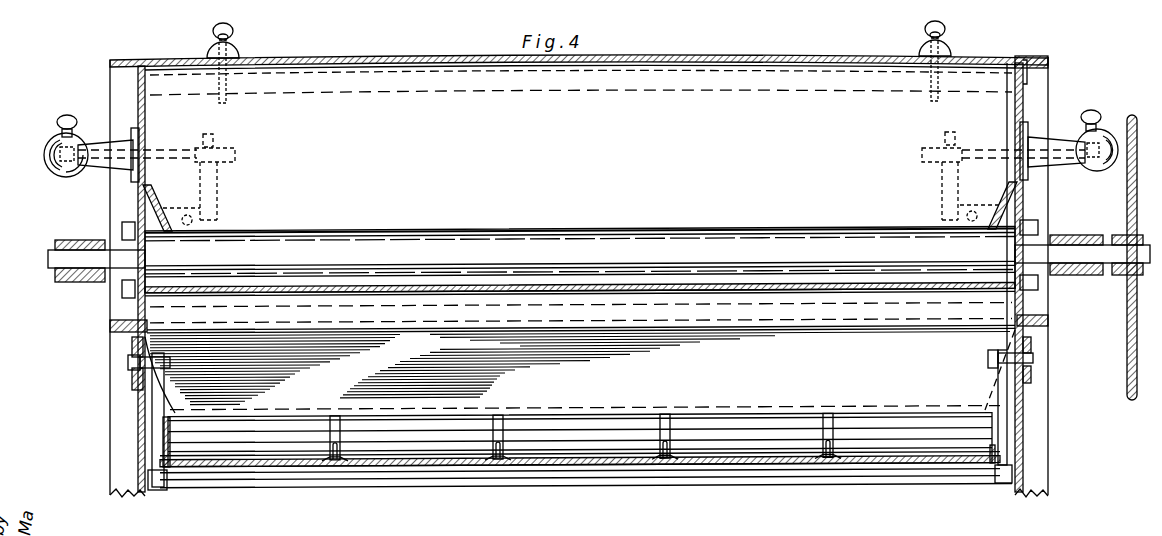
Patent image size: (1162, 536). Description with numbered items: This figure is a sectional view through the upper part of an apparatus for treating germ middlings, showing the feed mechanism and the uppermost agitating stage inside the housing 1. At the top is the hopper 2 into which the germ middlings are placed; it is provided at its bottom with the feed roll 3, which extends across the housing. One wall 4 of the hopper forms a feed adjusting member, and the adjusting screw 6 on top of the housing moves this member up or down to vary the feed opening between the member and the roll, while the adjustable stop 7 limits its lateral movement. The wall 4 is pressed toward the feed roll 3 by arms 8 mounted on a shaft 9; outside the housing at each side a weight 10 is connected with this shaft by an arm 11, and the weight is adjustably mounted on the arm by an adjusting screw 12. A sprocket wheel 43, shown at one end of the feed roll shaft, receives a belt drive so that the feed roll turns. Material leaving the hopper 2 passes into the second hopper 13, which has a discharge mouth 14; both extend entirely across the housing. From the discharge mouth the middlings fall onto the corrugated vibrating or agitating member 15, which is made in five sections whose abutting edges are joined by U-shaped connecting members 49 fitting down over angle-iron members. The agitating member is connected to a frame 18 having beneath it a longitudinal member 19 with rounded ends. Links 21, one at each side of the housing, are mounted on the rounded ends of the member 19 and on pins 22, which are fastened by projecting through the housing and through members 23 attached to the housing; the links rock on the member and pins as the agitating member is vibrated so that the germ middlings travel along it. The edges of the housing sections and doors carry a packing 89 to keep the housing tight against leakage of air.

The housing 1 is at (116, 506).
The hopper 2 is at (402, 296).
The feed roll 3 is at (363, 240).
The wall 4 is at (246, 105).
The adjusting screw 6 is at (212, 32).
The adjustable stop 7 is at (186, 214).
The arm 8 is at (217, 183).
The shaft 9 is at (166, 153).
The weight 10 is at (54, 172).
The arm 11 is at (60, 155).
The adjusting screw 12 is at (66, 116).
The second hopper 13 is at (467, 394).
The discharge mouth 14 is at (550, 418).
The vibrating or agitating member 15 is at (273, 444).
The frame 18 is at (165, 453).
The longitudinal member 19 is at (410, 476).
The link 21 is at (155, 393).
The pin 22 is at (128, 366).
The member 23 is at (132, 348).
The sprocket wheel 43 is at (1130, 388).
The U-shaped connecting member 49 is at (334, 432).
The packing 89 is at (110, 326).